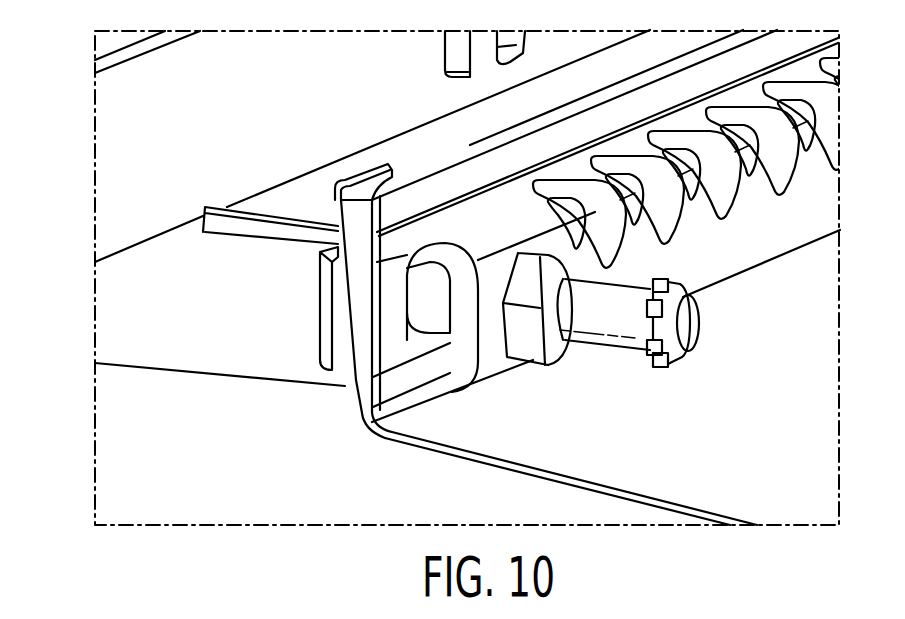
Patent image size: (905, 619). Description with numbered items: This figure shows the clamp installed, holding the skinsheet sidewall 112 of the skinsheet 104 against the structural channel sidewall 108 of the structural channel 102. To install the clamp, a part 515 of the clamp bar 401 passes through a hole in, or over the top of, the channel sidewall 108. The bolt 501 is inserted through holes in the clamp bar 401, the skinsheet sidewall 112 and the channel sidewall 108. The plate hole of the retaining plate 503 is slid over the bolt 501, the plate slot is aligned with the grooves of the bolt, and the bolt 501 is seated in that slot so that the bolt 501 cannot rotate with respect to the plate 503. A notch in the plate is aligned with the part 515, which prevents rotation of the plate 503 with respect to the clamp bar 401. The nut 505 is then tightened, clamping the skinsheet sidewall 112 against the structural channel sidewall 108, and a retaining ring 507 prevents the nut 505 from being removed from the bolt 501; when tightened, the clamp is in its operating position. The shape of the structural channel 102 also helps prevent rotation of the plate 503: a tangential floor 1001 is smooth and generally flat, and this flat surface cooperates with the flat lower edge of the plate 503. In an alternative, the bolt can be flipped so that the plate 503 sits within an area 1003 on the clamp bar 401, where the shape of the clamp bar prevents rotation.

The structural channel 102 is at (128, 318).
The skinsheet 104 is at (442, 428).
The structural channel sidewall 108 is at (347, 263).
The skinsheet sidewall 112 is at (393, 280).
The clamp bar 401 is at (503, 197).
The bolt 501 is at (630, 297).
The retaining plate 503 is at (323, 318).
The nut 505 is at (533, 353).
The retaining ring 507 is at (665, 368).
The part of clamp bar 515 is at (205, 219).
The tangential floor 1001 is at (172, 355).
The area 1003 is at (393, 368).